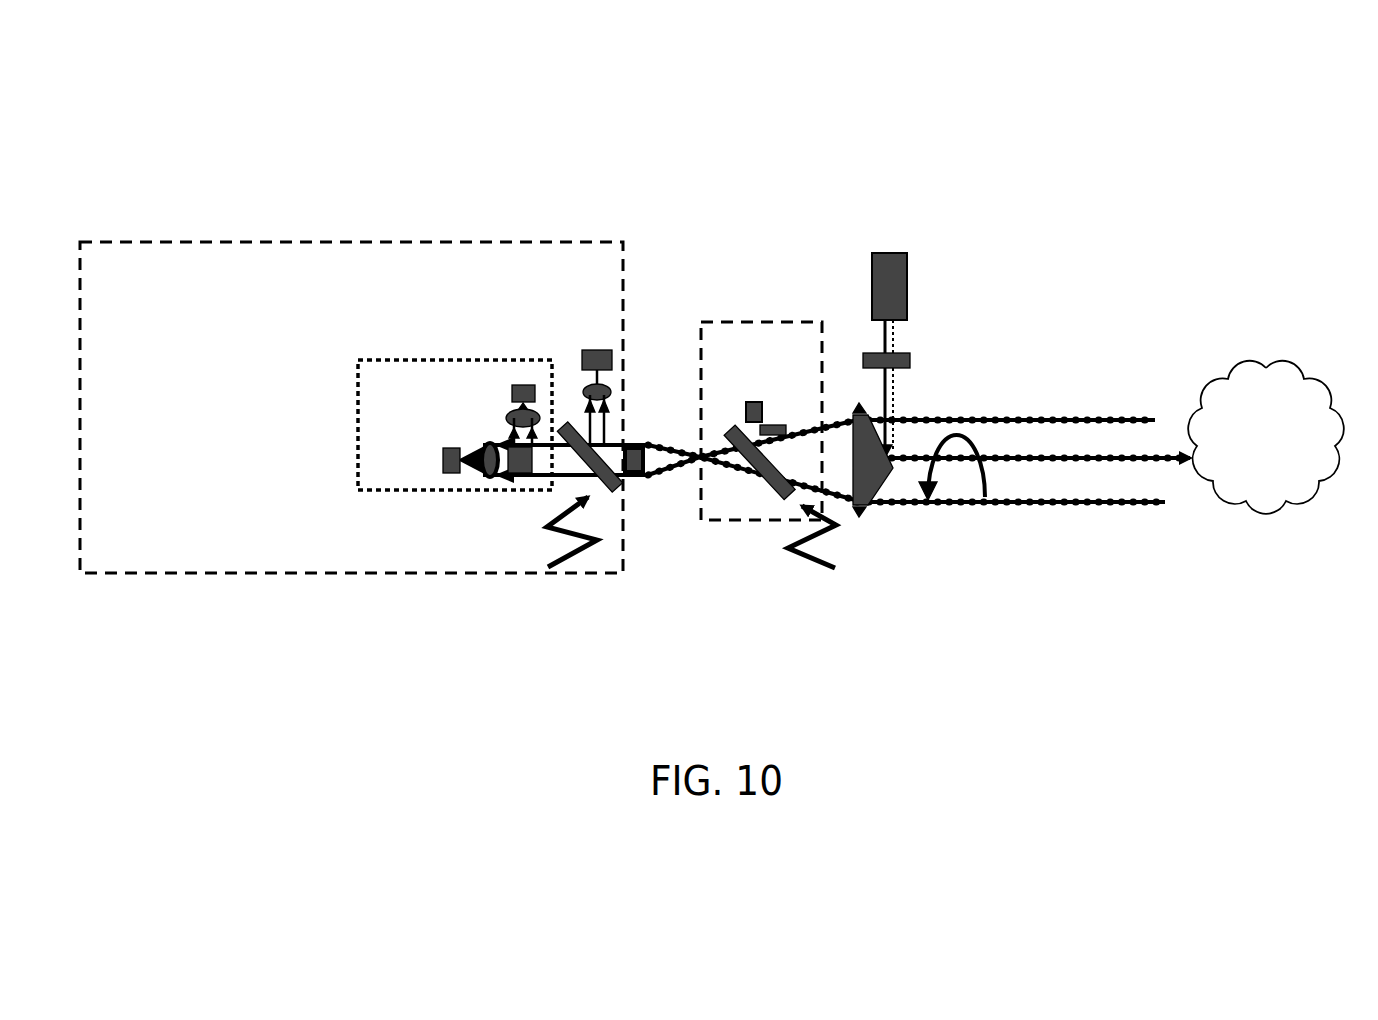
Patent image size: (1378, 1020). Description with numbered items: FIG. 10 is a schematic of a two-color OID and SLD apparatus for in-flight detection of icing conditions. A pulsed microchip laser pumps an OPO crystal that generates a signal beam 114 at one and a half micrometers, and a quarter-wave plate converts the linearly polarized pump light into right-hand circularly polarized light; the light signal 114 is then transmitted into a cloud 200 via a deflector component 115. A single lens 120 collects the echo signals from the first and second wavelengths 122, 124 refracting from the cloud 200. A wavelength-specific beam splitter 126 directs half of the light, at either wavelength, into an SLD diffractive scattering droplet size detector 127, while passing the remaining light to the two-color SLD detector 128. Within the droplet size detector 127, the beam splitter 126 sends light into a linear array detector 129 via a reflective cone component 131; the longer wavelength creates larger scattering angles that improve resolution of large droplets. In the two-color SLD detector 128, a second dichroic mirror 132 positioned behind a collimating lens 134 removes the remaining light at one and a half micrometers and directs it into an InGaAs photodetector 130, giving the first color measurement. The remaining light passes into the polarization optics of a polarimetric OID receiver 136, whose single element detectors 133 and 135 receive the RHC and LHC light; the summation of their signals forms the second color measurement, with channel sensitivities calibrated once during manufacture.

The two-color SLD detector 128 is at (455, 238).
The polarimetric OID receiver 136 is at (378, 357).
The single element detector 133 is at (525, 383).
The single element detector 135 is at (452, 477).
The InGaAs photodetector 130 is at (592, 348).
The collimating lens 134 is at (653, 472).
The second dichroic mirror 132 is at (619, 488).
The SLD diffractive scattering droplet size detector 127 is at (824, 318).
The linear array detector 129 is at (745, 410).
The reflective cone component 131 is at (782, 404).
The wavelength-specific beam splitter 126 is at (775, 495).
The deflector component 115 is at (890, 478).
The single lens 120 is at (873, 497).
The first wavelength echo signal 122 is at (1163, 417).
The signal beam 114 is at (1170, 455).
The second wavelength echo signal 124 is at (1143, 505).
The cloud 200 is at (1293, 350).